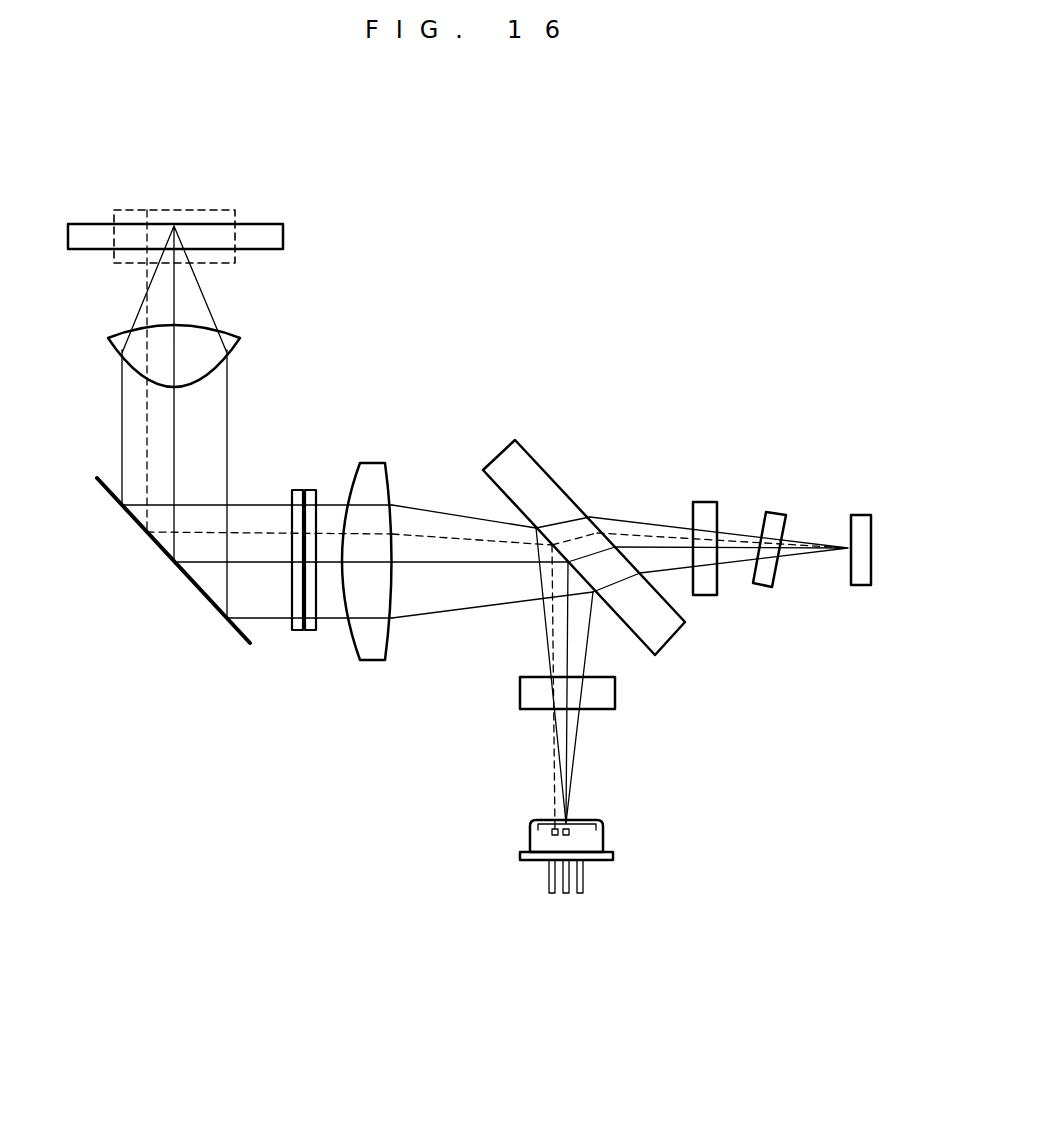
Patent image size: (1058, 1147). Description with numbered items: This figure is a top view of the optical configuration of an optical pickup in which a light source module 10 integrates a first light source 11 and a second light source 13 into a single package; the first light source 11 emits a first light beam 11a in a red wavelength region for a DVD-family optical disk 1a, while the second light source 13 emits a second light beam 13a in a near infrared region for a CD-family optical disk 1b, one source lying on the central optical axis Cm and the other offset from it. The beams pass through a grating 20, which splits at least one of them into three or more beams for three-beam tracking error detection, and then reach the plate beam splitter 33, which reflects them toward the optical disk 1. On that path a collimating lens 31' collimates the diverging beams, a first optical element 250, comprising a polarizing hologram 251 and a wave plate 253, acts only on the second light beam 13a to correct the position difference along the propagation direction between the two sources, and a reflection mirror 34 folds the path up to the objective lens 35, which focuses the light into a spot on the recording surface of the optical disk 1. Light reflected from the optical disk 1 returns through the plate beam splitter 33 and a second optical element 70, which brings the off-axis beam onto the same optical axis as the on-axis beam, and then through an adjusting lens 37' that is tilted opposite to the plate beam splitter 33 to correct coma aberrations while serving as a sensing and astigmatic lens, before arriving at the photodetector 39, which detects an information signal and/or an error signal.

The optical disk 1 is at (226, 196).
The optical disk in a DVD family 1a is at (273, 224).
The optical disk in a CD family 1b is at (216, 208).
The objective lens 35 is at (233, 340).
The reflection mirror 34 is at (200, 592).
The first optical element 250 is at (301, 564).
The wave plate 253 is at (293, 630).
The polarizing hologram 251 is at (308, 630).
The collimating lens 31' is at (370, 533).
The plate beam splitter 33 is at (540, 470).
The second optical element 70 is at (700, 510).
The adjusting lens 37' is at (773, 516).
The photodetector 39 is at (858, 515).
The grating 20 is at (607, 693).
The central optical axis Cm is at (567, 725).
The first light beam 11a is at (575, 760).
The second light beam 13a is at (553, 793).
The second light source 13 is at (552, 830).
The first light source 11 is at (597, 826).
The light source module 10 is at (553, 888).